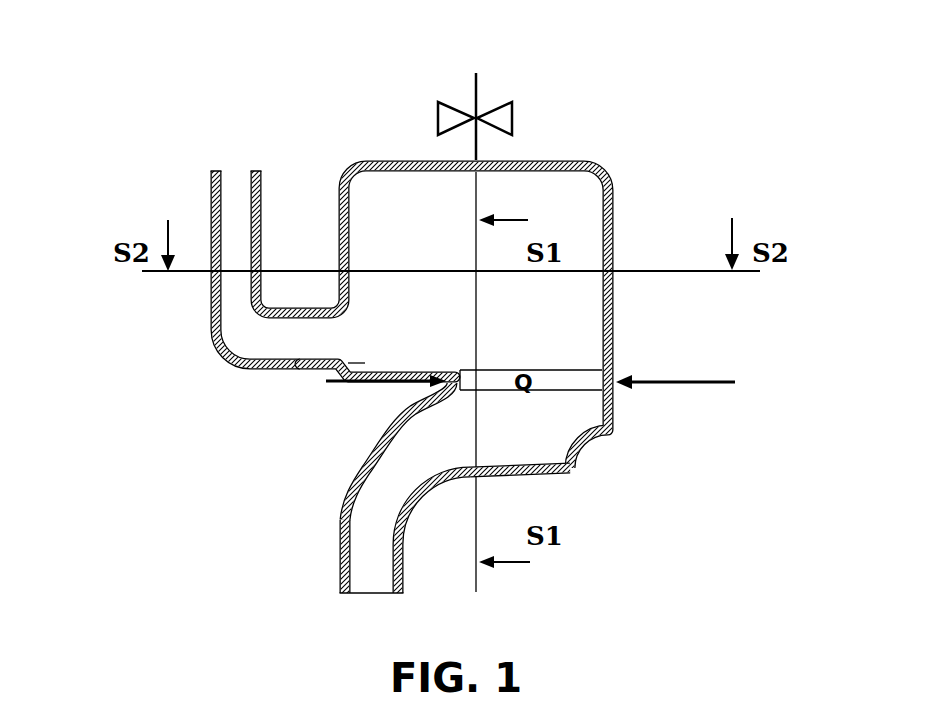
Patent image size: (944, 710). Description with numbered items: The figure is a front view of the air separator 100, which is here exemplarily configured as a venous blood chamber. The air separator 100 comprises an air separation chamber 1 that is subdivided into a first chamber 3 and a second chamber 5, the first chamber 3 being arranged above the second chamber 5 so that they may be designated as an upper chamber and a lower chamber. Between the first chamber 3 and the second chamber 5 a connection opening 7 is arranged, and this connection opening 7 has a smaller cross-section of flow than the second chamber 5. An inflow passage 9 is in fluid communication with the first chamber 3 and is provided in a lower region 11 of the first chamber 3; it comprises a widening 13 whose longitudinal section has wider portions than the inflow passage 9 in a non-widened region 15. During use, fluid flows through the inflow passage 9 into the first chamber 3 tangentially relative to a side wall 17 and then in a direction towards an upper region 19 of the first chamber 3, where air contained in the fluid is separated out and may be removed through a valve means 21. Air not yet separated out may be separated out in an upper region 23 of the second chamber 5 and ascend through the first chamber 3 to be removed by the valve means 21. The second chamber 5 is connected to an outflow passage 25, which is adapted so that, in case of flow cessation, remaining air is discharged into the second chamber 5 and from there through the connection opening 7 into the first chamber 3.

The air separation chamber 1 is at (613, 318).
The first chamber 3 is at (384, 207).
The second chamber 5 is at (555, 433).
The connection opening 7 is at (590, 378).
The inflow passage 9 is at (235, 330).
The lower region 11 is at (330, 367).
The widening 13 is at (333, 318).
The non-widened region 15 is at (228, 208).
The side wall 17 is at (337, 208).
The upper region 19 is at (523, 175).
The valve means 21 is at (457, 118).
The upper region 23 is at (493, 398).
The outflow passage 25 is at (368, 572).
The air separator 100 is at (633, 388).